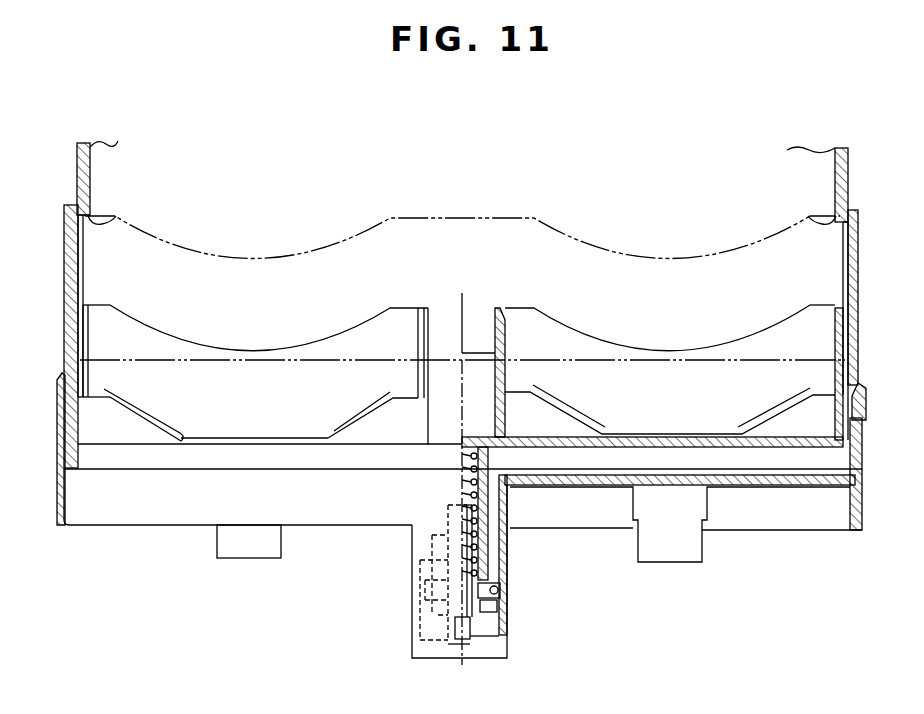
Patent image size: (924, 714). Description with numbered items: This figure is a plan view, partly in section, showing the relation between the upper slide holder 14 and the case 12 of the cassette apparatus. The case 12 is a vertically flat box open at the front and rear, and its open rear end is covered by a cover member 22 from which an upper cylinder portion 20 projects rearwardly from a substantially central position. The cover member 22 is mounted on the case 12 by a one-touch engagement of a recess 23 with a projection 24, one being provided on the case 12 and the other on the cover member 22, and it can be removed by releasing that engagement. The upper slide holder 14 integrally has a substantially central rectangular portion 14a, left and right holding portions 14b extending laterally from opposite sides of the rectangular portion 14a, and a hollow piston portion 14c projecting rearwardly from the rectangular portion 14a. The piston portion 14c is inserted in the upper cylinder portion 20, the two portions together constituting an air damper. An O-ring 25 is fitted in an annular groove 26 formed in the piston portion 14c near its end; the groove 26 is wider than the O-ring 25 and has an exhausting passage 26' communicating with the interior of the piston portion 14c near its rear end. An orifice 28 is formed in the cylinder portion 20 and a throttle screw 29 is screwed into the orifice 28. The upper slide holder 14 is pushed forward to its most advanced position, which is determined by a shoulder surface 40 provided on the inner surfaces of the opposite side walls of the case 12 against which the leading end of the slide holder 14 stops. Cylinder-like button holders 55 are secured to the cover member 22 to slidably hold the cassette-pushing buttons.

The case 12 is at (855, 256).
The upper slide holder 14 is at (462, 421).
The central rectangular portion 14a is at (484, 393).
The holding portions 14b is at (243, 370).
The hollow piston portion 14c is at (488, 517).
The upper cylinder portion 20 is at (507, 649).
The cover member 22 is at (804, 522).
The recess 23 is at (850, 386).
The projection 24 is at (866, 397).
The O-ring 25 is at (498, 591).
The annular groove 26 is at (515, 620).
The exhausting passage 26' is at (516, 578).
The orifice 28 is at (475, 620).
The throttle screw 29 is at (465, 641).
The shoulder surface 40 is at (116, 216).
The button holder 55 is at (266, 554).